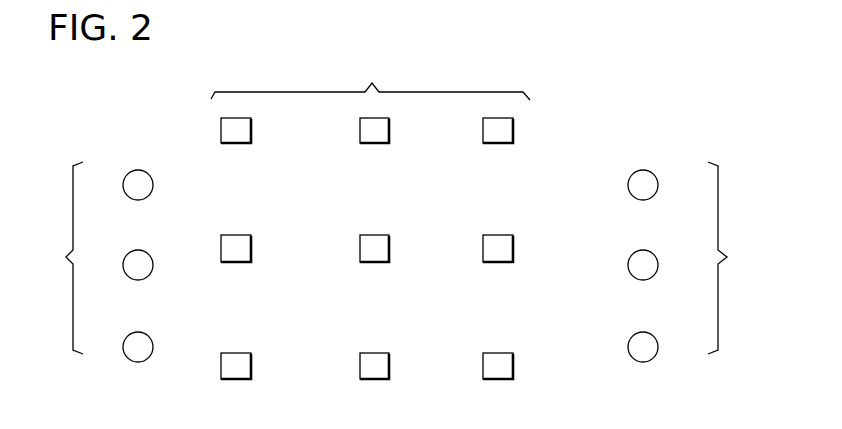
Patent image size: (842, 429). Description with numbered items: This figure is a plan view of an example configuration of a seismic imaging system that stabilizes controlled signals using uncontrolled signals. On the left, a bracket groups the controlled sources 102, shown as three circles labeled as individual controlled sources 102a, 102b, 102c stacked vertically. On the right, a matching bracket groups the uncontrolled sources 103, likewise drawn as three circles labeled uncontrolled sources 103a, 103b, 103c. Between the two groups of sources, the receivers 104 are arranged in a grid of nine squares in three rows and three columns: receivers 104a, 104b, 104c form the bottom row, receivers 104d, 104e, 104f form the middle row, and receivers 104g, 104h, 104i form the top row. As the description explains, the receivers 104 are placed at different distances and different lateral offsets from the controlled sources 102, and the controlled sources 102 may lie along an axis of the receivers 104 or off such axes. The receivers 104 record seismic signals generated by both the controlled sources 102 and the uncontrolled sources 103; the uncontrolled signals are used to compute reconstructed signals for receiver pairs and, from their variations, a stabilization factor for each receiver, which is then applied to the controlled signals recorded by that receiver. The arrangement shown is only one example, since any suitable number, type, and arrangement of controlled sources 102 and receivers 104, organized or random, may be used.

The controlled source 102 is at (55, 258).
The controlled source 102a is at (148, 333).
The controlled source 102b is at (148, 251).
The controlled source 102c is at (148, 171).
The uncontrolled source 103 is at (738, 258).
The uncontrolled source 103a is at (634, 333).
The uncontrolled source 103b is at (634, 251).
The uncontrolled source 103c is at (634, 171).
The receivers 104 is at (370, 78).
The receiver 104a is at (251, 363).
The receiver 104b is at (389, 363).
The receiver 104c is at (513, 363).
The receiver 104d is at (251, 245).
The receiver 104e is at (389, 245).
The receiver 104f is at (513, 245).
The receiver 104g is at (251, 128).
The receiver 104h is at (389, 128).
The receiver 104i is at (513, 128).